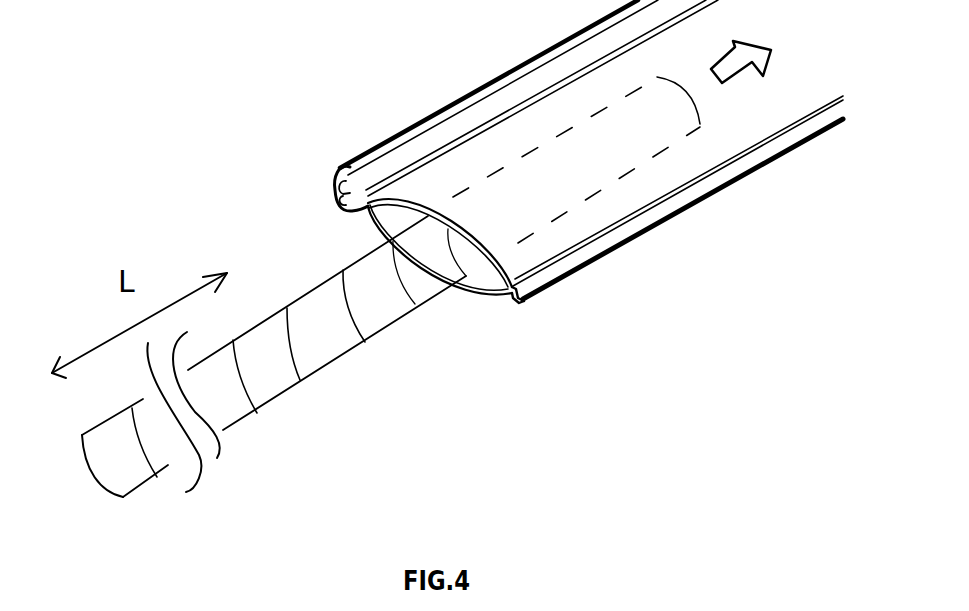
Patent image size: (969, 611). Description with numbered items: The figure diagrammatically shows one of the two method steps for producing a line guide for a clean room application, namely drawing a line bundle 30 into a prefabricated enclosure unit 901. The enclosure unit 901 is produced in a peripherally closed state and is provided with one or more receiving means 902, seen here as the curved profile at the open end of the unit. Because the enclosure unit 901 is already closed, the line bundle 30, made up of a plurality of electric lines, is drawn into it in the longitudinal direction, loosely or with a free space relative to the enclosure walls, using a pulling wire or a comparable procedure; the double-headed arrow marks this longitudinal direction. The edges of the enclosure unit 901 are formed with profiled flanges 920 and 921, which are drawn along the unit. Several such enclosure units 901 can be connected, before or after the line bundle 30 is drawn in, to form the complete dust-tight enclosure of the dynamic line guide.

The line bundle 30 is at (272, 383).
The enclosure unit 901 is at (757, 118).
The receiving means 902 is at (483, 275).
The upper hook flange 920 is at (365, 184).
The lower hook flange 921 is at (573, 257).